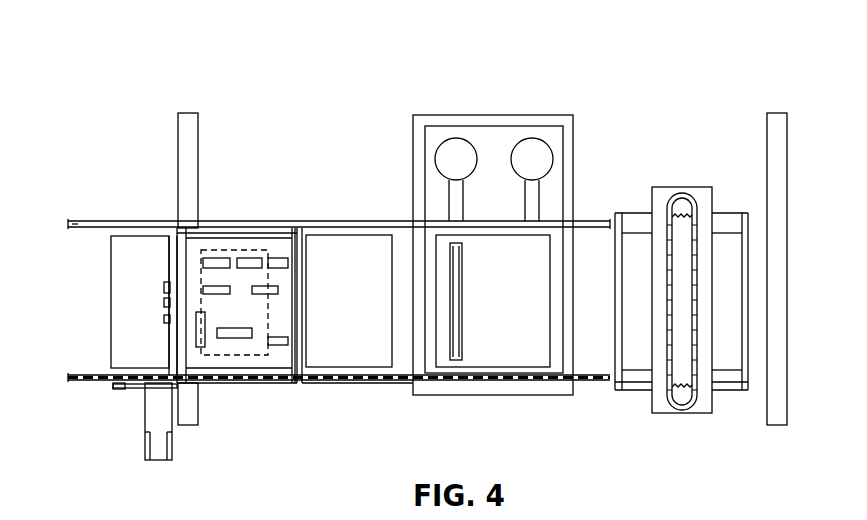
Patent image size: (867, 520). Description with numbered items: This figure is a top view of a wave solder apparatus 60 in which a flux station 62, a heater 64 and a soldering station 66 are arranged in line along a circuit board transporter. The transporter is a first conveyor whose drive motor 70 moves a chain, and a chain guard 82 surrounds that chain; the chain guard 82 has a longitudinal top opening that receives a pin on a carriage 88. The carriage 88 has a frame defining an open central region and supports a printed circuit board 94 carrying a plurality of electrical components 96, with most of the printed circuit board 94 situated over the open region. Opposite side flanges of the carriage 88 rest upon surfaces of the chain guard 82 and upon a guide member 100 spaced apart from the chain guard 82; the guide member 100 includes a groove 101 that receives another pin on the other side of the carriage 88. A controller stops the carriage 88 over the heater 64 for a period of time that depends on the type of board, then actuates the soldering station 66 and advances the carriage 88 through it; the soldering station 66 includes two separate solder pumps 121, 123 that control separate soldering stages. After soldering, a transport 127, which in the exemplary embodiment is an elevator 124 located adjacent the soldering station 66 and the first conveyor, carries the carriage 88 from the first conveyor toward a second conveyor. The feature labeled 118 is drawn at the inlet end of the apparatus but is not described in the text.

The wave solder apparatus 60 is at (327, 88).
The flux station 62 is at (264, 245).
The heater 64 is at (360, 337).
The soldering station 66 is at (502, 340).
The drive motor 70 is at (160, 440).
The chain guard 82 is at (80, 382).
The carriage 88 is at (302, 219).
The printed circuit board 94 is at (281, 352).
The electrical components 96 is at (249, 258).
The guide member 100 is at (135, 226).
The groove 101 is at (111, 220).
The loading module 118 is at (86, 268).
The solder pump 121 is at (453, 155).
The solder pump 123 is at (530, 153).
The elevator 124 is at (696, 170).
The transport 127 is at (645, 170).